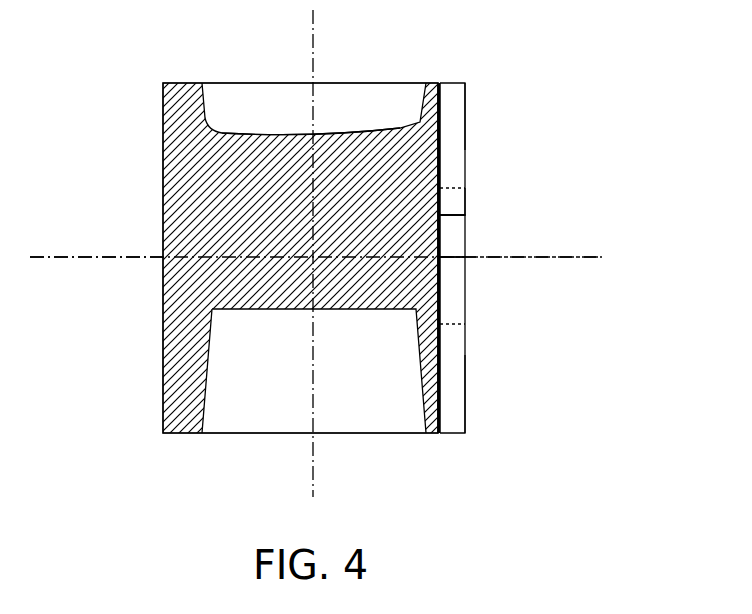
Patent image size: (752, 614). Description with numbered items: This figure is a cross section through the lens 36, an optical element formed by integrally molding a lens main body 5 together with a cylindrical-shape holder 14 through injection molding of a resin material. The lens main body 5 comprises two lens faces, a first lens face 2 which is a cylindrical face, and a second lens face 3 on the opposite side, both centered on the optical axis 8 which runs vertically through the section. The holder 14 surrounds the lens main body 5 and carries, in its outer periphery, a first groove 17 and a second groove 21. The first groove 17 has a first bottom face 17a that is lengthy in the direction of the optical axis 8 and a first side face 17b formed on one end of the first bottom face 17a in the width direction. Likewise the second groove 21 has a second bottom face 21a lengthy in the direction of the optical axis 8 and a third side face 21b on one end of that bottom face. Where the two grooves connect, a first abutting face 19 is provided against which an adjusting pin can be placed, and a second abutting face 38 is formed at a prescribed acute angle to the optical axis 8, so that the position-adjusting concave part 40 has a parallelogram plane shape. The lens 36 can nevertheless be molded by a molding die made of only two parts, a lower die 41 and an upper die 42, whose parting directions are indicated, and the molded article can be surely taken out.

The lens 36 is at (140, 78).
The holder 14 is at (163, 190).
The lens main body 5 is at (237, 130).
The first lens face 2 is at (343, 132).
The second lens face 3 is at (347, 309).
The optical axis 8 is at (313, 47).
The first groove 17 is at (455, 169).
The first bottom face 17a is at (440, 97).
The first side face 17b is at (455, 142).
The first abutting face 19 is at (455, 200).
The second abutting face 38 is at (455, 229).
The position-adjusting concave part 40 is at (455, 268).
The second groove 21 is at (457, 350).
The third side face 21b is at (456, 370).
The second bottom face 21a is at (440, 393).
The lower die 41 is at (66, 263).
The upper die 42 is at (83, 255).